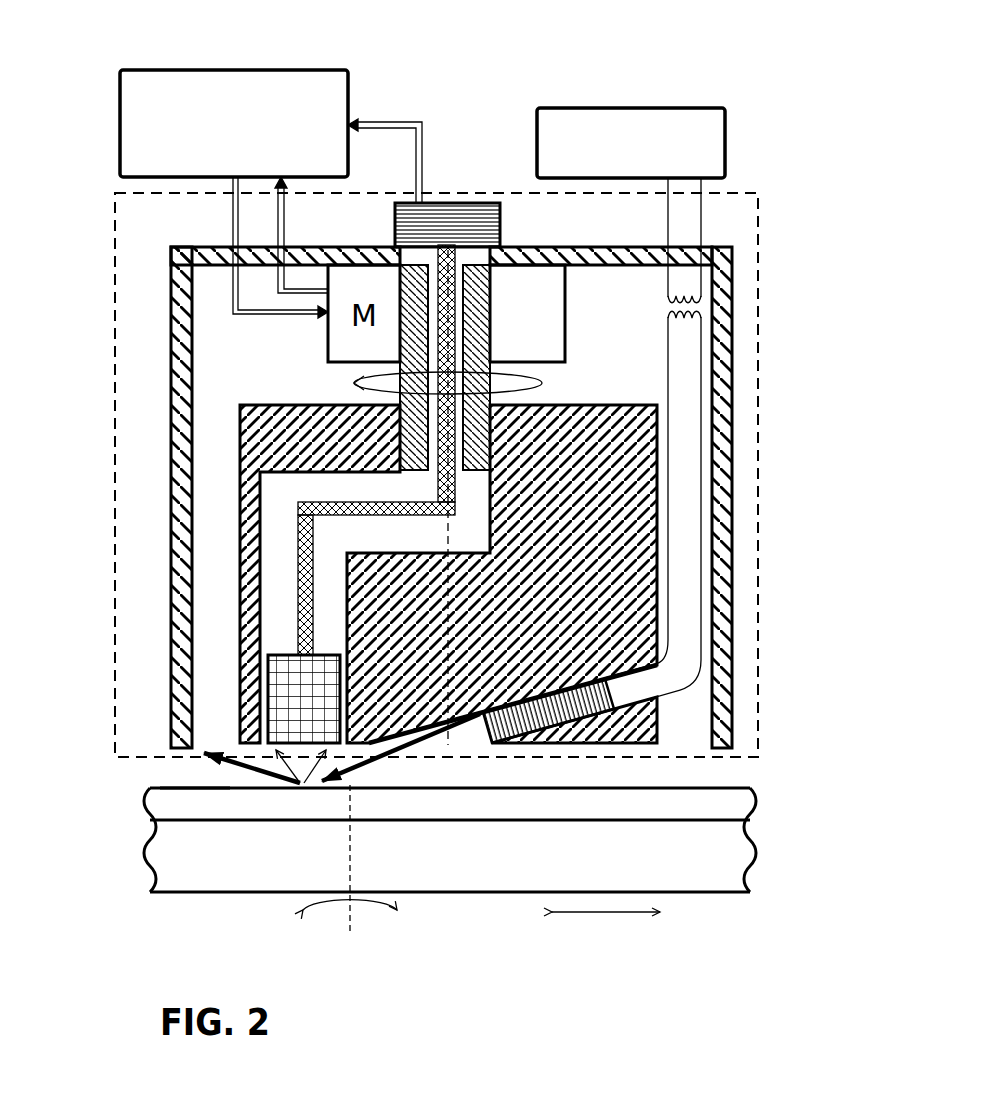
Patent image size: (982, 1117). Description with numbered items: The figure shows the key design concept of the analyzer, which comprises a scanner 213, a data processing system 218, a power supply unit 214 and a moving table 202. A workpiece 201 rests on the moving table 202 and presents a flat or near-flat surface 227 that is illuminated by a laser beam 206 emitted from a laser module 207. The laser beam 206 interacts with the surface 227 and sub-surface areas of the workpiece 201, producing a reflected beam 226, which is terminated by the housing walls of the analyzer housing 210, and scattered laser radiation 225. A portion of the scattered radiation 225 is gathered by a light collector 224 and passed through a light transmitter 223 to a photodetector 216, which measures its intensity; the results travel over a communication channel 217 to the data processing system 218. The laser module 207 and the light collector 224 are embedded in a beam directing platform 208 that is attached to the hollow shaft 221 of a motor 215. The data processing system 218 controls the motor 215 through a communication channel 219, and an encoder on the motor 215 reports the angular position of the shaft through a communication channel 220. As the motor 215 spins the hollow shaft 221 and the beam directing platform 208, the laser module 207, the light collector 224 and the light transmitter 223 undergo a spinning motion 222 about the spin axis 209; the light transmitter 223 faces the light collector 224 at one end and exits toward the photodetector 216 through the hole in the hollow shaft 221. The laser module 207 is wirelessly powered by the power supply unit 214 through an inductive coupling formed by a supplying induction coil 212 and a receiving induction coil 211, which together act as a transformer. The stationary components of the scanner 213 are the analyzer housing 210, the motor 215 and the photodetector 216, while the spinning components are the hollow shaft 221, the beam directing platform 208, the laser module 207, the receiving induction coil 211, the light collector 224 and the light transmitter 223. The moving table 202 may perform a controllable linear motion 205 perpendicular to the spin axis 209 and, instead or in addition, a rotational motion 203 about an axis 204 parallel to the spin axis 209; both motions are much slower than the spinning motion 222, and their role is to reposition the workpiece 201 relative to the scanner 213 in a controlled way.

The workpiece 201 is at (198, 806).
The moving table 202 is at (267, 866).
The rotational motion 203 is at (356, 852).
The axis 204 is at (406, 915).
The linear motion 205 is at (629, 918).
The laser beam 206 is at (416, 763).
The laser module 207 is at (556, 710).
The beam directing platform 208 is at (292, 430).
The spin axis 209 is at (624, 612).
The analyzer housing 210 is at (736, 470).
The receiving induction coil 211 is at (691, 327).
The supplying induction coil 212 is at (690, 291).
The scanner 213 is at (762, 208).
The power supply unit 214 is at (634, 104).
The motor 215 is at (511, 276).
The photodetector 216 is at (459, 222).
The communication channel 217 is at (380, 118).
The data processing system 218 is at (236, 66).
The communication channel 219 is at (226, 213).
The communication channel 220 is at (276, 228).
The hollow shaft 221 is at (408, 350).
The spinning motion 222 is at (350, 383).
The light transmitter 223 is at (292, 558).
The light collector 224 is at (294, 687).
The scattered laser radiation 225 is at (292, 766).
The reflected beam 226 is at (228, 771).
The surface 227 is at (180, 785).